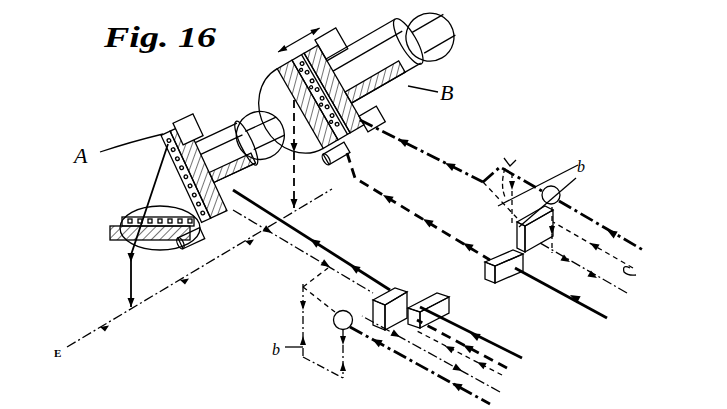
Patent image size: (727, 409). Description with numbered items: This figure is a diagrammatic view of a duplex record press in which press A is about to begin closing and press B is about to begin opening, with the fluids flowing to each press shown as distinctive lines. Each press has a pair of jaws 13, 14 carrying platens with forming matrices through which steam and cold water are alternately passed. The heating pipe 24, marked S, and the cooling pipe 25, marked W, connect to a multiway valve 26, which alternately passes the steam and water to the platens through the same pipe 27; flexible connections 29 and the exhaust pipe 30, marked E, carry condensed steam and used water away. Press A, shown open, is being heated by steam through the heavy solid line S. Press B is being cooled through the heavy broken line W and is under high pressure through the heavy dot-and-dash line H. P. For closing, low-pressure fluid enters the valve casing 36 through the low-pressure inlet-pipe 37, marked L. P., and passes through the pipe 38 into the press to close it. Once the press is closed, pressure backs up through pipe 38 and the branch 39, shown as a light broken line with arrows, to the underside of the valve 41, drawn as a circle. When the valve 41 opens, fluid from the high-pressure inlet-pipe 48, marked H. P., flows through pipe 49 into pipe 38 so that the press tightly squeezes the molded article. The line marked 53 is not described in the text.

The jaw 13 is at (170, 132).
The jaw 14 is at (132, 208).
The flexible connections 29 is at (112, 226).
The pipe 30 is at (131, 277).
The pipe 38 is at (413, 146).
The pipe 27 is at (393, 204).
The pipe 49 is at (522, 151).
The branch 39 is at (515, 181).
The valve 41 is at (560, 196).
The high-pressure inlet-pipe 48 is at (626, 238).
The valve casing 36 is at (517, 229).
The multiway valve 26 is at (440, 297).
The heating pipe 24 is at (558, 294).
The low-pressure inlet-pipe 37 is at (640, 279).
The exhaust conduit 53 is at (632, 301).
The cooling pipe 25 is at (462, 333).